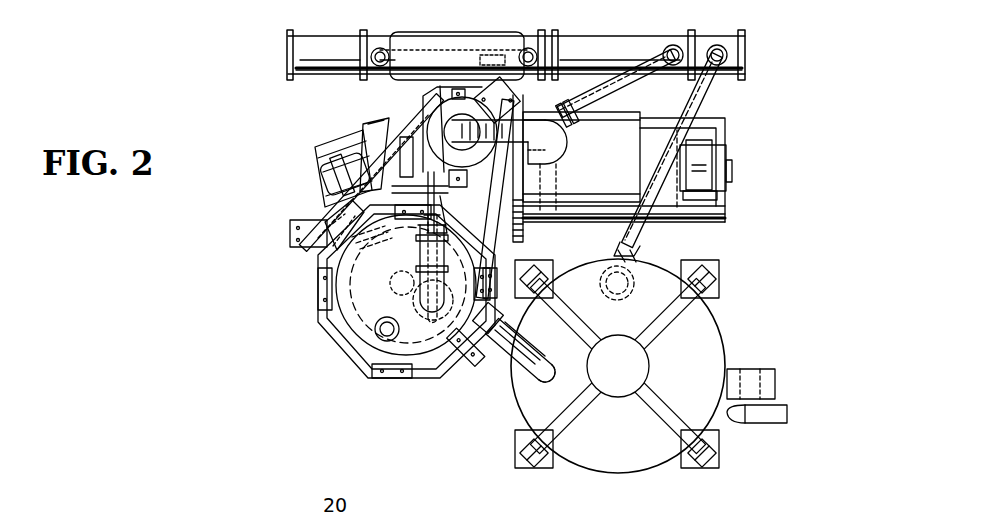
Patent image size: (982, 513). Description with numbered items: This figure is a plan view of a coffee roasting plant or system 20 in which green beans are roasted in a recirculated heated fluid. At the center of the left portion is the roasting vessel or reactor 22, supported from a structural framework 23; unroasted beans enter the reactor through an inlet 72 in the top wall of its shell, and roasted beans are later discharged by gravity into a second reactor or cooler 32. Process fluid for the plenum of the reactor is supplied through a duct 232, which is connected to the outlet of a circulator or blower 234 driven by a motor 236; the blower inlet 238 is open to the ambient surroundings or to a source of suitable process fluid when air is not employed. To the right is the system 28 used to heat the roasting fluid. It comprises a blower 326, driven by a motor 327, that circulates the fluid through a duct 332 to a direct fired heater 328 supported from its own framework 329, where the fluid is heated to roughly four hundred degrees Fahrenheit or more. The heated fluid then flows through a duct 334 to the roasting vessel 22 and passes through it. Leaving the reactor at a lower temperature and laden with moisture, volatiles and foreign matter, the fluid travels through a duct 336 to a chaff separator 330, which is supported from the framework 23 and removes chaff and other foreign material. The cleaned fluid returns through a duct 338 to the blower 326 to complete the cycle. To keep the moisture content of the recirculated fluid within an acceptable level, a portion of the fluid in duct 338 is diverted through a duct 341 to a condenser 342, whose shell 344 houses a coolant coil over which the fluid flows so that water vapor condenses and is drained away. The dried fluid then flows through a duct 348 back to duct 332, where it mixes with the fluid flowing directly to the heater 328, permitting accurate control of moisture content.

The coffee roasting plant or system 20 is at (232, 217).
The roasting vessel or reactor 22 is at (333, 285).
The structural framework 23 is at (322, 343).
The system for heating the roasting fluid 28 is at (790, 203).
The second reactor or cooler 32 is at (340, 312).
The inlet for green or unroasted beans 72 is at (372, 345).
The duct 232 is at (330, 222).
The circulator or blower 234 is at (370, 120).
The motor 236 is at (330, 150).
The blower inlet 238 is at (416, 148).
The blower 326 is at (627, 175).
The motor 327 is at (727, 153).
The direct fired heater 328 is at (596, 470).
The framework 329 is at (659, 433).
The chaff separator 330 is at (583, 190).
The duct 332 is at (636, 246).
The duct 334 is at (490, 378).
The duct 336 is at (446, 250).
The duct 338 is at (560, 142).
The duct 341 is at (613, 90).
The condenser 342 is at (465, 26).
The shell 344 is at (596, 40).
The duct 348 is at (714, 85).